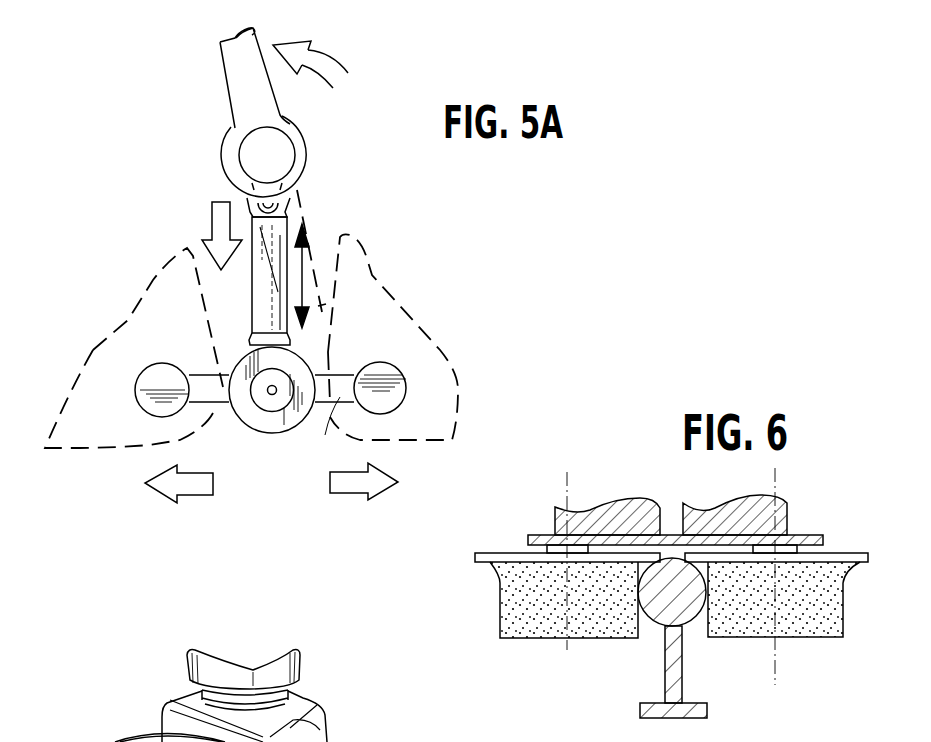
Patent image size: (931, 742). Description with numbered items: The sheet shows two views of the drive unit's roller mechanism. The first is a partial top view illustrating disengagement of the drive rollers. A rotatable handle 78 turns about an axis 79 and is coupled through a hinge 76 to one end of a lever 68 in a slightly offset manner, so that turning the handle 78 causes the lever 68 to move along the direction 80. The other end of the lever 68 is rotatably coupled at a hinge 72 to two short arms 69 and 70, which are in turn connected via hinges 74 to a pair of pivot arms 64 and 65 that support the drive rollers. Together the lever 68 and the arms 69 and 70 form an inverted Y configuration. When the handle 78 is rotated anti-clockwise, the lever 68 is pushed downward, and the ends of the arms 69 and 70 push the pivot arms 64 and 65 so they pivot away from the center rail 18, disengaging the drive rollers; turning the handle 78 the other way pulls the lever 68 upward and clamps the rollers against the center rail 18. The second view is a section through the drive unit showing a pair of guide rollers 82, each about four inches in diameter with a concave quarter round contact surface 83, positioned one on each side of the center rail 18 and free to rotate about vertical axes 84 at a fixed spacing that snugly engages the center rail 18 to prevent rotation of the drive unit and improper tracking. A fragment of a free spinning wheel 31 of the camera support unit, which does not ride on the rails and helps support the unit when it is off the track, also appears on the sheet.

In FIG. 5A, the rotatable handle 78 is at (238, 67).
In FIG. 5A, the axis 79 is at (273, 155).
In FIG. 5A, the hinge 76 is at (277, 203).
In FIG. 5A, the lever 68 is at (258, 235).
In FIG. 5A, the direction 80 is at (303, 269).
In FIG. 5A, the short arm 69 is at (232, 378).
In FIG. 5A, the hinge 72 is at (272, 393).
In FIG. 5A, the hinges 74 is at (157, 380).
In FIG. 5A, the pivot arm 65 is at (100, 412).
In FIG. 5A, the pivot arm 64 is at (438, 408).
In FIG. 5A, the short arm 70 is at (324, 435).
In FIG. 5A, the free spinning wheel 31 is at (105, 741).
In FIG. 6, the vertical axes 84 is at (568, 482).
In FIG. 6, the guide rollers 82 is at (548, 640).
In FIG. 6, the concave quarter round contact surface 83 is at (503, 603).
In FIG. 6, the center rail 18 is at (698, 668).